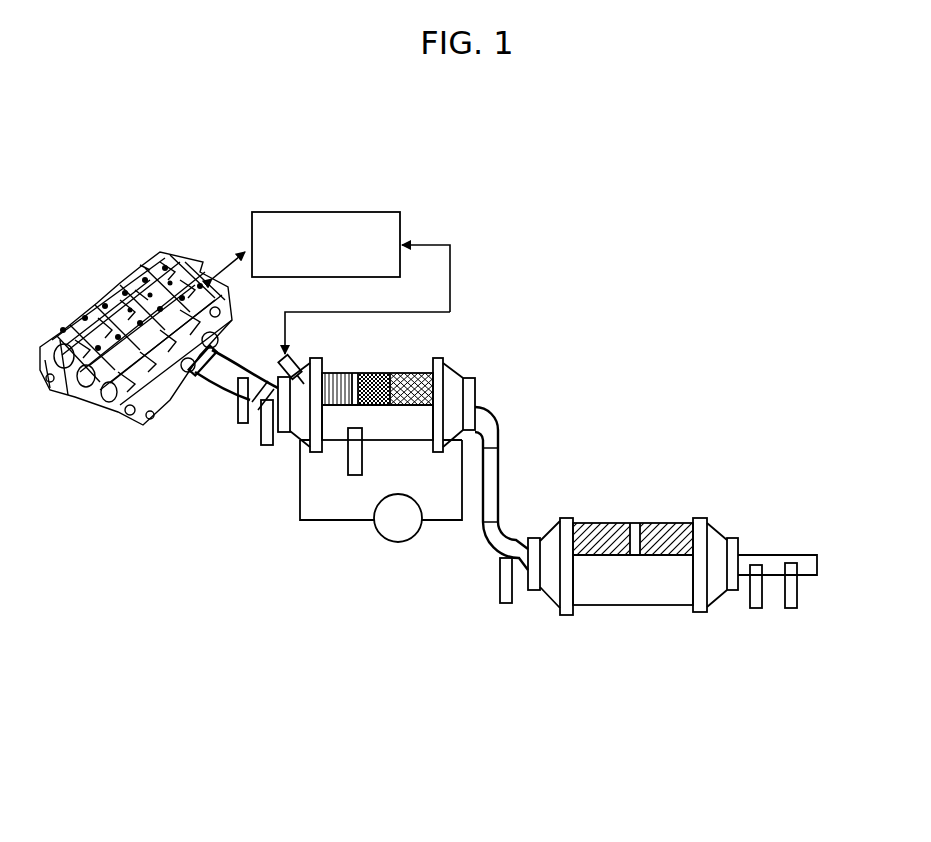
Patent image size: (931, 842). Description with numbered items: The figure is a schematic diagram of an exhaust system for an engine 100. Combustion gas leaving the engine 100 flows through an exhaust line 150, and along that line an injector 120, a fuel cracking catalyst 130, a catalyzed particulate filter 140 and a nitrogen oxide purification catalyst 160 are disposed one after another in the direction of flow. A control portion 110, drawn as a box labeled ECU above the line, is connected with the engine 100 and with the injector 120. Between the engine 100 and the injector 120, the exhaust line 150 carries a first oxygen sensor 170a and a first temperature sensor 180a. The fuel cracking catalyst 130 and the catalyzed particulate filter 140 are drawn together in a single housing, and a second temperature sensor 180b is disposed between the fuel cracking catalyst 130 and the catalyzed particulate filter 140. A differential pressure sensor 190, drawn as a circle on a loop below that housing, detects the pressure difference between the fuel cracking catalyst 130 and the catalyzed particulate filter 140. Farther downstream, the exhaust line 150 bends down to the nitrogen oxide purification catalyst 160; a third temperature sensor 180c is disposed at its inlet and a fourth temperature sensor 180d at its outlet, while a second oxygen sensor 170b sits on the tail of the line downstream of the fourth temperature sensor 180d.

The engine 100 is at (128, 276).
The control portion 110 is at (327, 212).
The injector 120 is at (298, 357).
The fuel cracking catalyst 130 is at (345, 373).
The catalyzed particulate filter 140 is at (413, 373).
The exhaust line 150 is at (495, 422).
The nitrogen oxide purification catalyst 160 is at (602, 523).
The first oxygen sensor 170a is at (237, 418).
The second oxygen sensor 170b is at (791, 610).
The first temperature sensor 180a is at (268, 447).
The second temperature sensor 180b is at (355, 475).
The third temperature sensor 180c is at (507, 605).
The fourth temperature sensor 180d is at (756, 610).
The differential pressure sensor 190 is at (398, 542).